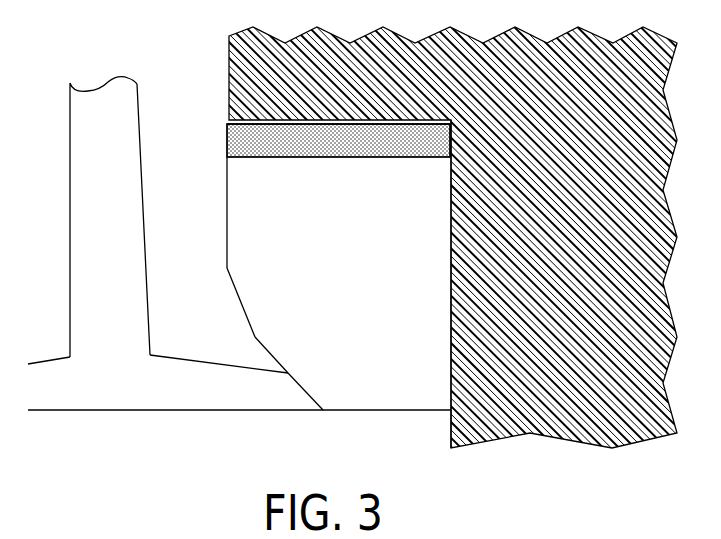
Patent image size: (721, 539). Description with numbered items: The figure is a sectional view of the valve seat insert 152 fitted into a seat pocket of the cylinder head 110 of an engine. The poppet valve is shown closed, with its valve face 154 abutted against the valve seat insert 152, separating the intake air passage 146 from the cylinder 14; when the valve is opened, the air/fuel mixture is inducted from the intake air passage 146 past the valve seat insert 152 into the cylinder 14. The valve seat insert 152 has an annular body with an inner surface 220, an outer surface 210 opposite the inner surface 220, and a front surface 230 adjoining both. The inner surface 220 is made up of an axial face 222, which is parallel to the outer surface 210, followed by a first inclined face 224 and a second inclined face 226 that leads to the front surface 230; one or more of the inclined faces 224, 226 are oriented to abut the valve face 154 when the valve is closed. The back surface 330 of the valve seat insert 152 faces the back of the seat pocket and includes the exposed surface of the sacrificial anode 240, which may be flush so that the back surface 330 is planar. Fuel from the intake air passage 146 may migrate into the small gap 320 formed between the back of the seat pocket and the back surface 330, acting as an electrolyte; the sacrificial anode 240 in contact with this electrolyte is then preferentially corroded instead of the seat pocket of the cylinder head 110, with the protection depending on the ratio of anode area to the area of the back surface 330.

The cylinder 14 is at (152, 455).
The cylinder head 110 is at (229, 68).
The intake air passage 146 is at (177, 192).
The valve seat insert 152 is at (348, 270).
The valve face 154 is at (98, 393).
The outer surface 210 is at (450, 318).
The inner surface 220 is at (304, 283).
The axial face 222 is at (229, 196).
The inclined face 224 is at (250, 314).
The inclined face 226 is at (299, 379).
The front surface 230 is at (353, 408).
The sacrificial anode 240 is at (406, 142).
The small gap 320 is at (227, 120).
The back surface 330 is at (371, 126).